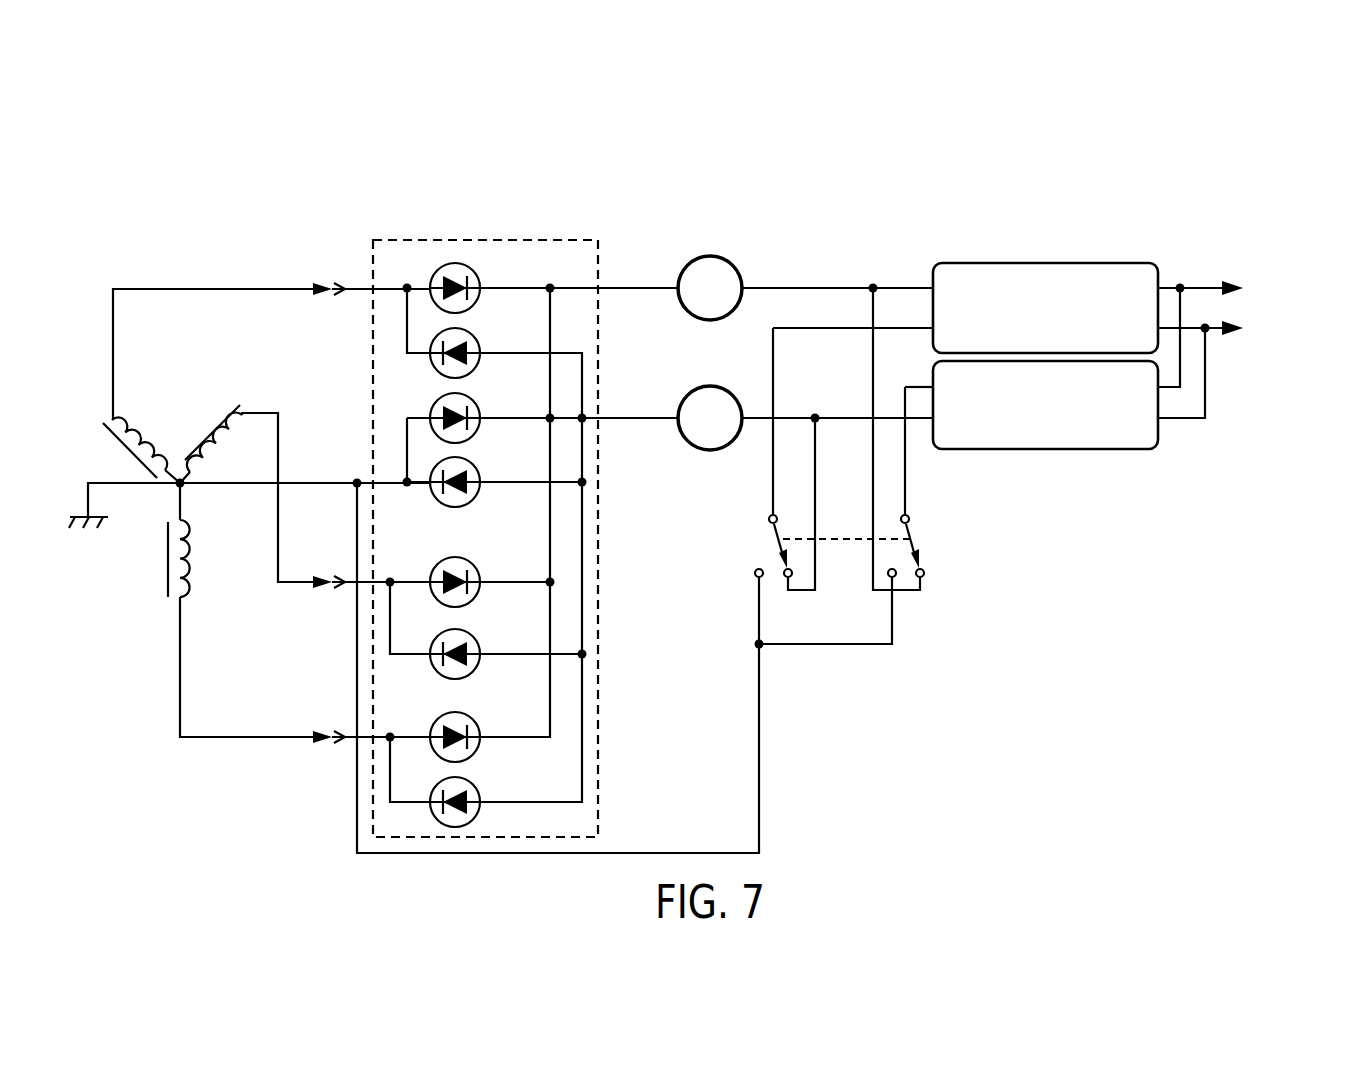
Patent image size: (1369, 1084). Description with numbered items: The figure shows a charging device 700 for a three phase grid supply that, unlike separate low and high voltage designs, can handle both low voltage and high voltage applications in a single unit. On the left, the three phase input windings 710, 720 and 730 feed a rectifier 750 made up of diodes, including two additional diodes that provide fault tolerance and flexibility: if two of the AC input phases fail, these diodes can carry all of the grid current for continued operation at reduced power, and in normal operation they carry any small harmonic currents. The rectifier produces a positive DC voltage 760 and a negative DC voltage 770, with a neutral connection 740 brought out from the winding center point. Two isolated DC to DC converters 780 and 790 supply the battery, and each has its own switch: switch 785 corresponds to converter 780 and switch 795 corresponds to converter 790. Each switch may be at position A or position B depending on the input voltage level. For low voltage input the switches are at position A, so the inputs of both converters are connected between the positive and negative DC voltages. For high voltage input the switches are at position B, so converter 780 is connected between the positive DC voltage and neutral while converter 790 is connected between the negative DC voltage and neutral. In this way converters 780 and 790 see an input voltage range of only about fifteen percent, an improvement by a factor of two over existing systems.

The charging device 700 is at (1100, 155).
The first generator winding 710 is at (135, 438).
The second generator winding 720 is at (217, 432).
The third generator winding 730 is at (190, 558).
The switch common connection 740 is at (826, 646).
The rectifier diode bridge 750 is at (598, 687).
The positive DC terminal 760 is at (694, 260).
The negative DC terminal 770 is at (695, 447).
The DC to DC converter 780 is at (1110, 263).
The switch 785 is at (775, 535).
The DC to DC converter 790 is at (1110, 449).
The switch 795 is at (912, 535).